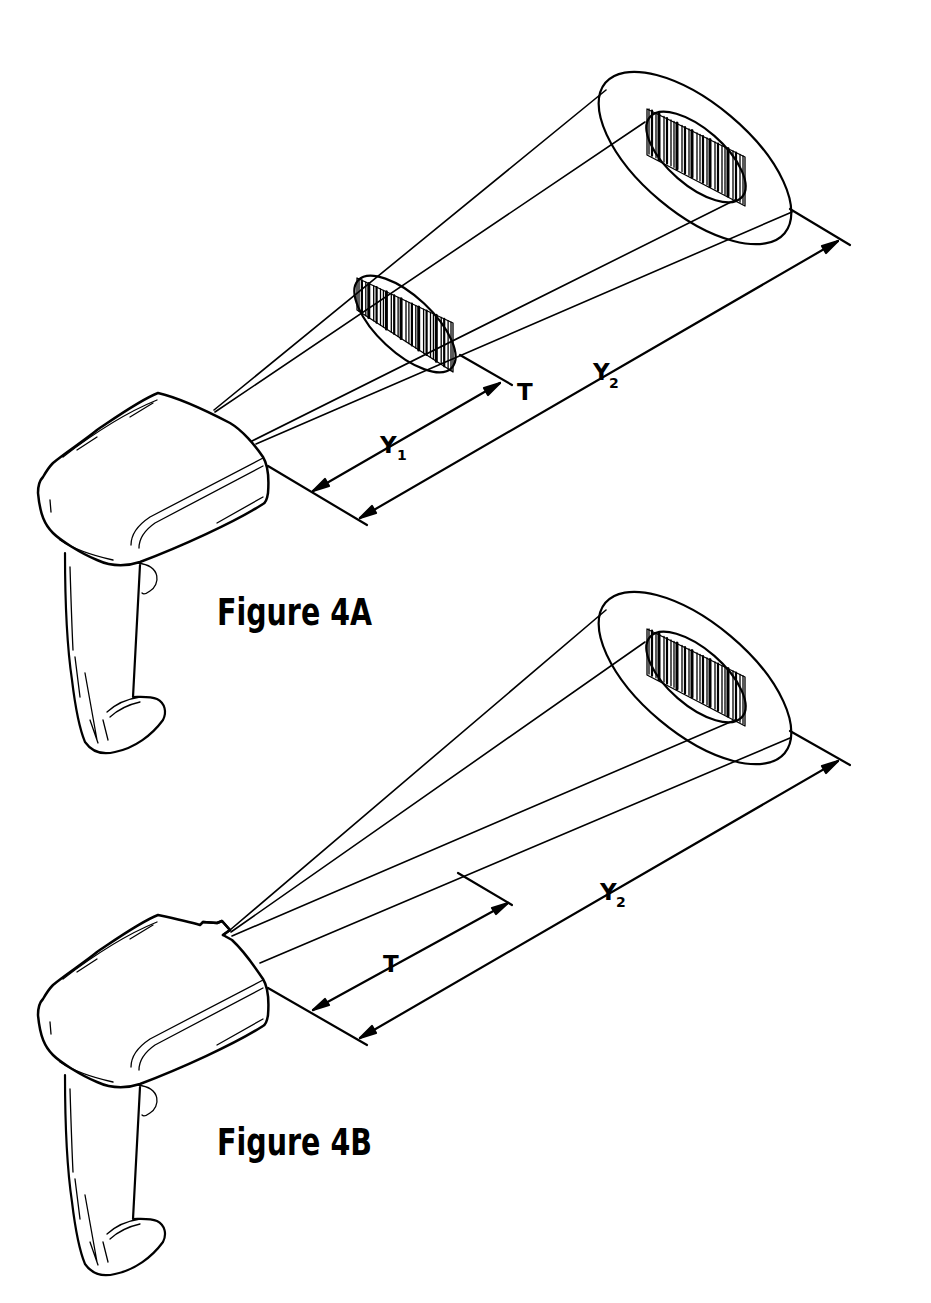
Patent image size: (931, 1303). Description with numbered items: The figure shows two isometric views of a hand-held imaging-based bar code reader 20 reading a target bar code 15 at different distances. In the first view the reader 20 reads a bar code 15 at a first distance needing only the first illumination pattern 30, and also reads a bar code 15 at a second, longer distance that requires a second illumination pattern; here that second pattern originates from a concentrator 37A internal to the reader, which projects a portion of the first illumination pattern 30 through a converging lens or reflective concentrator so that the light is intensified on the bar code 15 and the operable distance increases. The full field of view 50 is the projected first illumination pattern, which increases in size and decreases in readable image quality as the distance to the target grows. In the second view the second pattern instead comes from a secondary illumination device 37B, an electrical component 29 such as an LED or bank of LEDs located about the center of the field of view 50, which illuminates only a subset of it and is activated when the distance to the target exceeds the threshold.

In FIG. 4A, the bar code reader 20 is at (106, 400).
In FIG. 4B, the bar code reader 20 is at (96, 935).
In FIG. 4A, the full field of view 50 is at (758, 118).
In FIG. 4B, the full field of view 50 is at (627, 580).
In FIG. 4A, the target bar code 15 is at (670, 180).
In FIG. 4B, the target bar code 15 is at (662, 695).
In FIG. 4A, the concentrator 37A is at (613, 272).
In FIG. 4B, the secondary illumination device 37B is at (622, 782).
In FIG. 4B, the electrical component 29 is at (227, 912).
In FIG. 4B, the first illumination pattern 30 is at (553, 862).